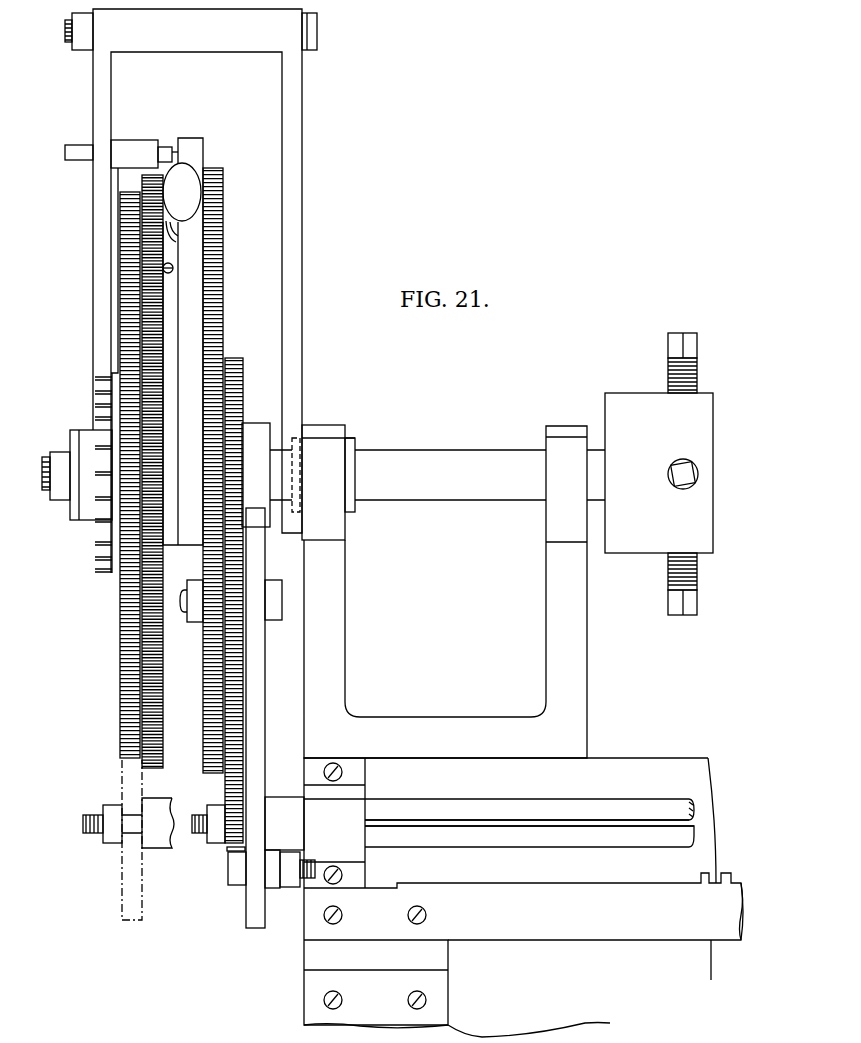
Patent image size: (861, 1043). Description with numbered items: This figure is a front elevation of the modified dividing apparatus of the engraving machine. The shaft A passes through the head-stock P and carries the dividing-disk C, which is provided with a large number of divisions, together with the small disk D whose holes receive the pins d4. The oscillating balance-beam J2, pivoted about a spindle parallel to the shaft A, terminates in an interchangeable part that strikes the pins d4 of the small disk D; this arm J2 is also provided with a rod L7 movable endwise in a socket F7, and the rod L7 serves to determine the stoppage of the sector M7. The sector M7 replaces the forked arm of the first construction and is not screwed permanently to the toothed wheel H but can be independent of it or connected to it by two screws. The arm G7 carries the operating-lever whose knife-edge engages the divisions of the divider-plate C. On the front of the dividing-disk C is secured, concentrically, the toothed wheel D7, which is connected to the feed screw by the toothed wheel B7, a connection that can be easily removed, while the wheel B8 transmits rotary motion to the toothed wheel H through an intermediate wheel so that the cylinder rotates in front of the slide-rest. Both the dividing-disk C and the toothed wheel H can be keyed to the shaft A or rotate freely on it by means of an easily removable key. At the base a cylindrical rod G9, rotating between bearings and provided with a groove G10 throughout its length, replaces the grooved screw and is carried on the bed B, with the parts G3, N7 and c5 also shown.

The shaft A is at (452, 486).
The base plate B is at (505, 877).
The toothed wheel B7 is at (105, 882).
The wheel B8 is at (218, 870).
The dividing-disk C is at (128, 296).
The disk D is at (96, 491).
The toothed wheel D7 is at (80, 344).
The pins d4 is at (94, 474).
The socket F7 is at (144, 154).
The gear G3 is at (152, 848).
The arm G7 is at (203, 600).
The cylindrical rod G9 is at (575, 806).
The groove G10 is at (638, 826).
The toothed wheel H is at (246, 313).
The balance-beam J2 is at (100, 253).
The rod L7 is at (80, 188).
The sector M7 is at (183, 341).
The cam N7 is at (182, 192).
The head-stock P is at (445, 592).
The pawl c5 is at (181, 237).